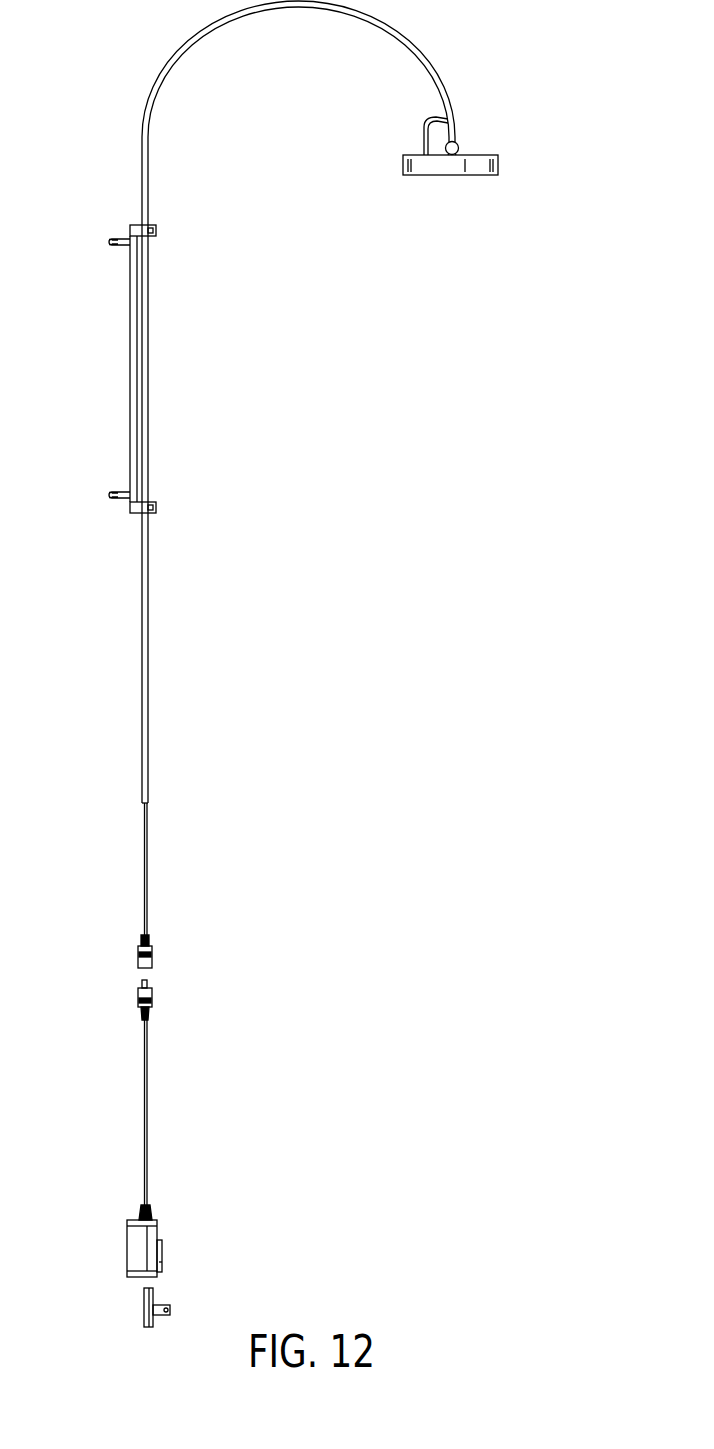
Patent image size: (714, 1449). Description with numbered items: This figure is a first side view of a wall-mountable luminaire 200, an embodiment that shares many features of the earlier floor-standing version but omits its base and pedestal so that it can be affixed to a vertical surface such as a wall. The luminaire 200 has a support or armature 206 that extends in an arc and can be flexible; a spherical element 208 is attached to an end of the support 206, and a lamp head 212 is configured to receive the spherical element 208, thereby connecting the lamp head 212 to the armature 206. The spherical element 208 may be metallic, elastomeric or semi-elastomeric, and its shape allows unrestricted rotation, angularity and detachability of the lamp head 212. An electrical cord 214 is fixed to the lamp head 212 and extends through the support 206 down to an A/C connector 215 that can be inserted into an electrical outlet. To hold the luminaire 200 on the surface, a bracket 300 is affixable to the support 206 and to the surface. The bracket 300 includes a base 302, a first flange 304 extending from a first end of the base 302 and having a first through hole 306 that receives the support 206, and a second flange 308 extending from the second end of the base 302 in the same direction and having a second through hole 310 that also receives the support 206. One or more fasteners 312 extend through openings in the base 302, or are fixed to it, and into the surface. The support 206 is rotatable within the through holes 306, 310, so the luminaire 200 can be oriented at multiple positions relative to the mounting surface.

The luminaire 200 is at (325, 663).
The support or armature 206 is at (403, 40).
The spherical element 208 is at (458, 148).
The lamp head 212 is at (497, 165).
The electrical cord 214 is at (427, 147).
The A/C connector 215 is at (160, 1248).
The bracket 300 is at (123, 366).
The base 302 is at (130, 320).
The first flange 304 is at (153, 232).
The first through hole 306 is at (132, 202).
The second flange 308 is at (147, 507).
The second through hole 310 is at (130, 514).
The fasteners 312 is at (105, 242).